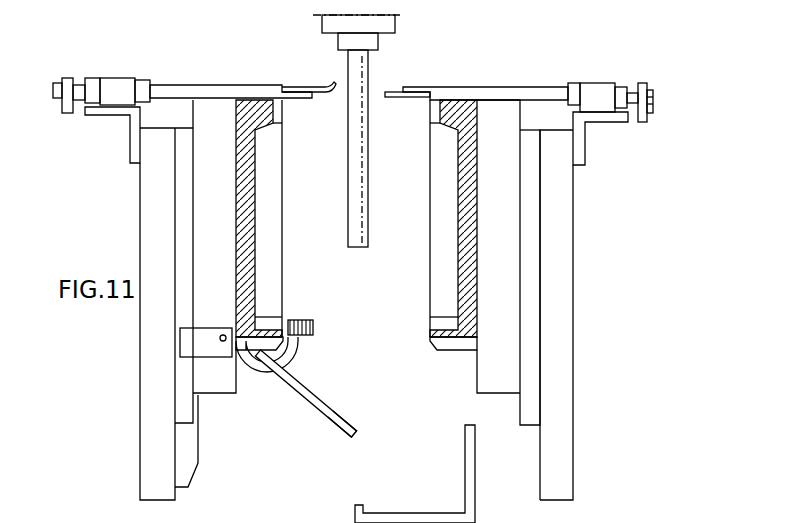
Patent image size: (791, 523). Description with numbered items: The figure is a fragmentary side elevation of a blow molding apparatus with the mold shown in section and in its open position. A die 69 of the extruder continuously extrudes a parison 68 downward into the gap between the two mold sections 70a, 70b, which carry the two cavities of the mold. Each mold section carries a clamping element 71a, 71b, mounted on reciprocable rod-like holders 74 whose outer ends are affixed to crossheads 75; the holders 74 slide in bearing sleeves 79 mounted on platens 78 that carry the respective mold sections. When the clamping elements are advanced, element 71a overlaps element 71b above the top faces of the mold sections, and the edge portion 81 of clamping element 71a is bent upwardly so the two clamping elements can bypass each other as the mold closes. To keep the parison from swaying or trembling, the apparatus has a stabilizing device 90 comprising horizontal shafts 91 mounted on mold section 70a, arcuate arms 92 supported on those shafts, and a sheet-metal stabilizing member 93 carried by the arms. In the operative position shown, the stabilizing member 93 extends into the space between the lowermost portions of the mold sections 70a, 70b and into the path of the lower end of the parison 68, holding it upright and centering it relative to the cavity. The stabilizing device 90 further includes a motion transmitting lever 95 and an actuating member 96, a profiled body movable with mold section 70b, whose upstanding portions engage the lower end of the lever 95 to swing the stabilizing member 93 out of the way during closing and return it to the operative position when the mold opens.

The parison 68 is at (363, 220).
The die 69 is at (373, 41).
The mold section 70a is at (248, 218).
The mold section 70b is at (463, 268).
The clamping element 71a is at (290, 87).
The clamping element 71b is at (395, 92).
The rod-like holder 74 is at (503, 95).
The crosshead 75 is at (647, 115).
The platen 78 is at (510, 285).
The bearing sleeve 79 is at (593, 92).
The edge portion 81 is at (322, 85).
The stabilizing device 90 is at (297, 395).
The horizontal shaft 91 is at (223, 335).
The arcuate arm 92 is at (262, 372).
The stabilizing member 93 is at (300, 323).
The motion transmitting lever 95 is at (330, 408).
The actuating member 96 is at (462, 482).